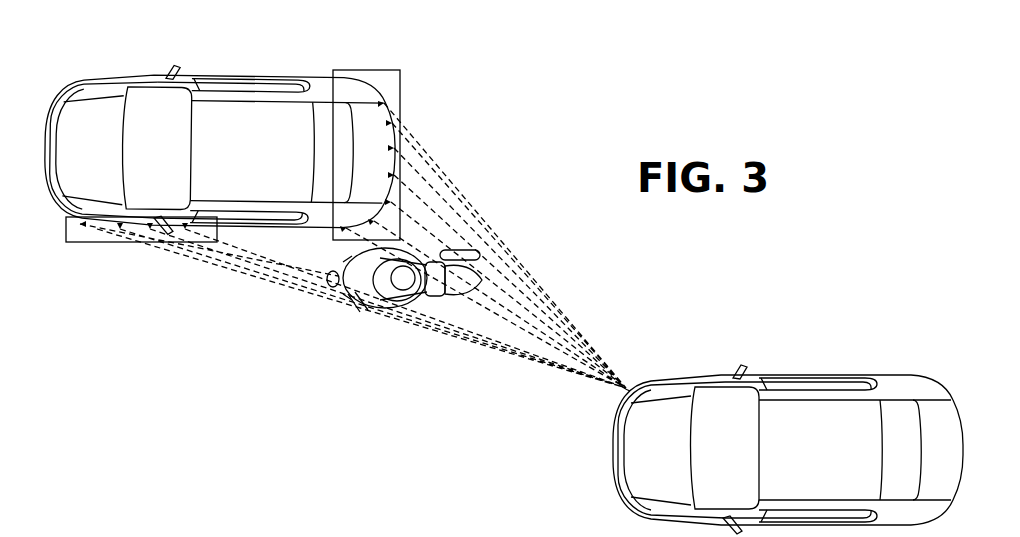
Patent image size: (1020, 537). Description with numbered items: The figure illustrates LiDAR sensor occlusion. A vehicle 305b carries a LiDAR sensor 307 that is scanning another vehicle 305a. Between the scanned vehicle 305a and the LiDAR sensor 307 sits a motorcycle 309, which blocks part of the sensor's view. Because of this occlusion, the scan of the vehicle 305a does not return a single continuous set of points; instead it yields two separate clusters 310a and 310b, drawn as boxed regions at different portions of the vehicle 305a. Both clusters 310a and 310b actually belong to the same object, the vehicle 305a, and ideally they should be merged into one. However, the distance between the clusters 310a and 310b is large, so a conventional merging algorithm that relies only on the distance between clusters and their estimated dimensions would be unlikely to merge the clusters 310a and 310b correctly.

The vehicle 305a is at (202, 79).
The vehicle 305b is at (766, 378).
The LiDAR sensor 307 is at (626, 390).
The motorcycle 309 is at (335, 296).
The cluster 310a is at (374, 69).
The cluster 310b is at (93, 244).